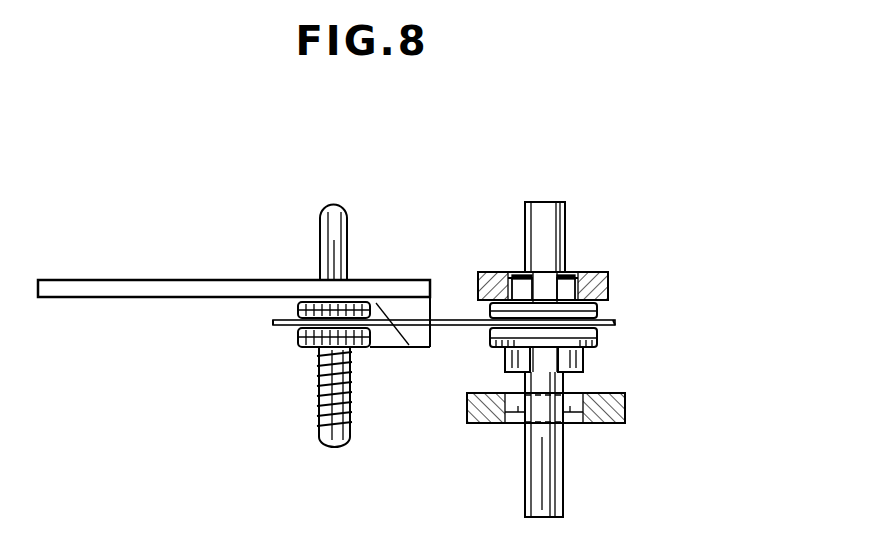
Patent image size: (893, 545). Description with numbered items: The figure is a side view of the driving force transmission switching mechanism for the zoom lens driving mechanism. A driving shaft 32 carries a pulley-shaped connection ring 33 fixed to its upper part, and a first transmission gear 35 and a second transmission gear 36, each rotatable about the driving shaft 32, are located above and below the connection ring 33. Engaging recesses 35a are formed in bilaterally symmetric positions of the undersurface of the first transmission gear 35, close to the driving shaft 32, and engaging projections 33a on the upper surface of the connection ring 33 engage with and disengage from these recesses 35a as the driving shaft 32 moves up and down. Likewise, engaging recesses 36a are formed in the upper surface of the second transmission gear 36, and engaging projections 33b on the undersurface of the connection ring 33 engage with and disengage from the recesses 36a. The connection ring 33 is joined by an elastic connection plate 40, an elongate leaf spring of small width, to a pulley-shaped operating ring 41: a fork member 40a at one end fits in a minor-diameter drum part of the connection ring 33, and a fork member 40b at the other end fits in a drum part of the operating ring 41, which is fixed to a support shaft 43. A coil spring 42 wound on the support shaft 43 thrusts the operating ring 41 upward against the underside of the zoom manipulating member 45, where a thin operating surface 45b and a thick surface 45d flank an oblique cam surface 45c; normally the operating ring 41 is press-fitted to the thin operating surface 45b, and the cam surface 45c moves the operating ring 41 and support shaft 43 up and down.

The driving shaft 32 is at (528, 495).
The connection ring 33 is at (595, 333).
The engaging projections 33a is at (515, 277).
The engaging projections 33b is at (585, 362).
The first transmission gear 35 is at (607, 275).
The engaging recesses 35a is at (518, 275).
The second transmission gear 36 is at (597, 424).
The engaging recesses 36a is at (523, 410).
The elastic connection plate 40 is at (452, 320).
The fork member 40a is at (613, 321).
The fork member 40b is at (274, 323).
The operating ring 41 is at (297, 344).
The coil spring 42 is at (352, 368).
The support shaft 43 is at (320, 427).
The zoom manipulating member 45 is at (124, 298).
The thin operating surface 45b is at (378, 307).
The oblique cam surface 45c is at (385, 348).
The thick surface 45d is at (425, 348).